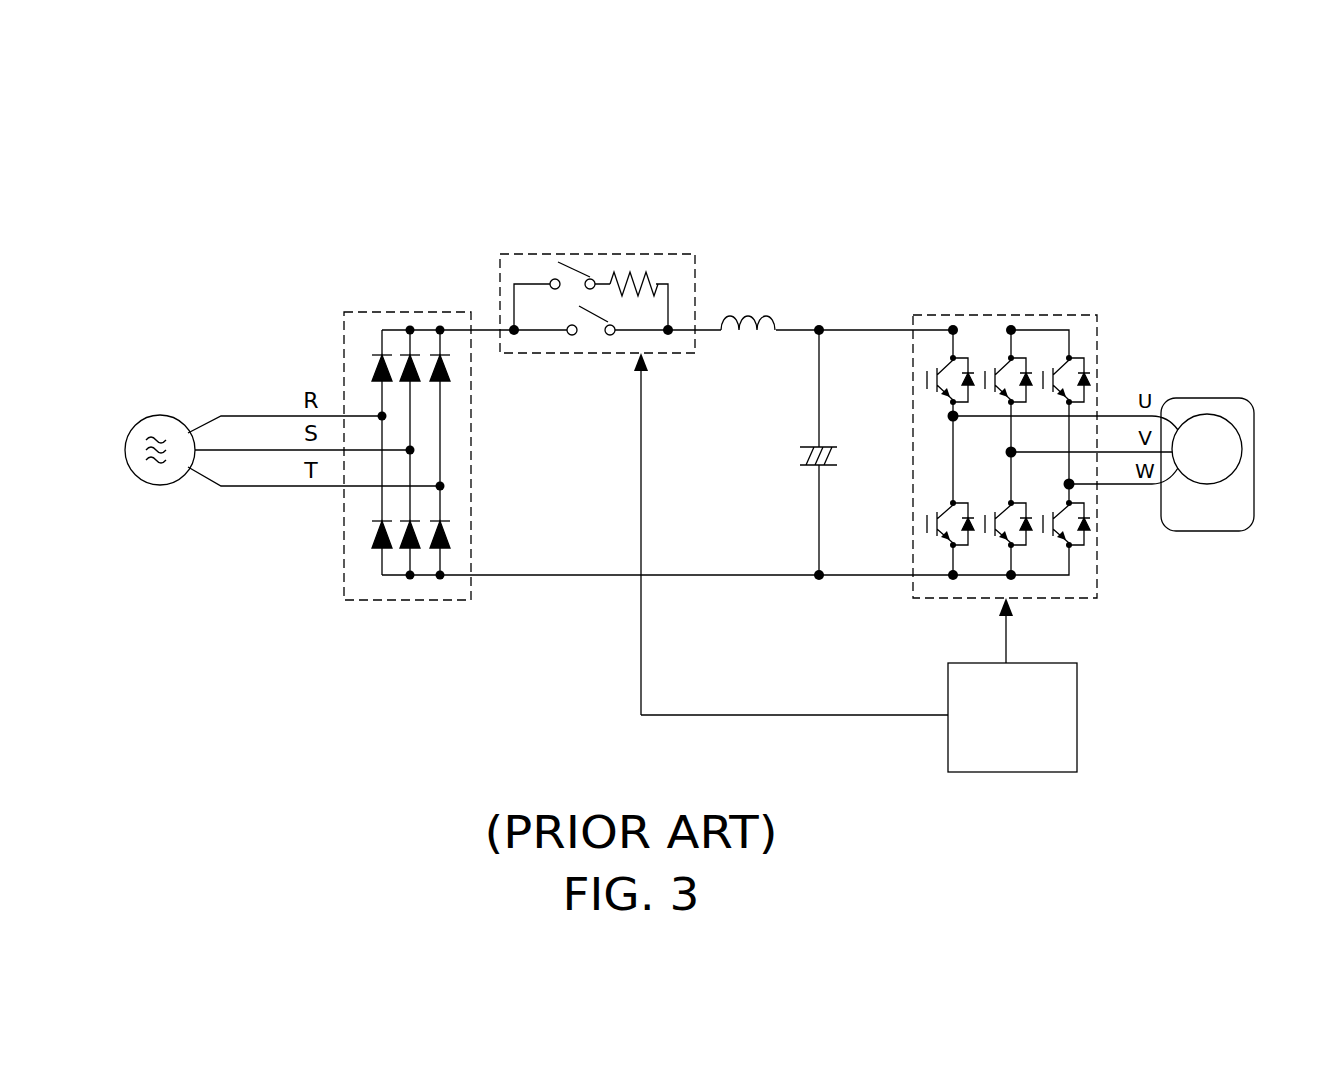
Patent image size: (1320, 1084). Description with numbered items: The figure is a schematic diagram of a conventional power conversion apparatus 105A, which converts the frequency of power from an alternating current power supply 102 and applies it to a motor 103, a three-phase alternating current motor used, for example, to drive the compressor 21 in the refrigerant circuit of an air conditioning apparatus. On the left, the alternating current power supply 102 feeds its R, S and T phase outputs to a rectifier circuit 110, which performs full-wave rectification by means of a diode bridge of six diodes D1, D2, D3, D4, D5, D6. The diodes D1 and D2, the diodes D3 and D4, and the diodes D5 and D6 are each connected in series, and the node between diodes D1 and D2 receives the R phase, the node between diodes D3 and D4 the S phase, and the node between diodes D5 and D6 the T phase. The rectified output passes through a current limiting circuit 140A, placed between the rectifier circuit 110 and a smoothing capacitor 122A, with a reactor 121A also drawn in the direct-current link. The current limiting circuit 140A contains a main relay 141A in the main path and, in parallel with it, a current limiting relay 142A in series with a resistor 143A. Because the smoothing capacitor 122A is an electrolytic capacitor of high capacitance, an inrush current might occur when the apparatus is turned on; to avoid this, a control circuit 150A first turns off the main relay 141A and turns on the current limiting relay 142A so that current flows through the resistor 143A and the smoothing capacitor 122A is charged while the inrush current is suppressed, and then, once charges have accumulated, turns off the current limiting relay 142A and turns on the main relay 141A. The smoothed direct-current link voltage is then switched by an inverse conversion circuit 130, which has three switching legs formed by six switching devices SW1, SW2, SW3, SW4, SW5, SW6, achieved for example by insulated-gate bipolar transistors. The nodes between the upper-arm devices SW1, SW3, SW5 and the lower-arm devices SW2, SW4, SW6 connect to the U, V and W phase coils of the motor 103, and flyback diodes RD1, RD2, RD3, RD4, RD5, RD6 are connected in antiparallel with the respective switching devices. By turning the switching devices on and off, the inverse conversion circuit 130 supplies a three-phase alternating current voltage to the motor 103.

The alternating current power supply 102 is at (160, 487).
The rectifier circuit 110 is at (360, 312).
The diode D1 is at (385, 352).
The diode D2 is at (380, 550).
The diode D3 is at (413, 352).
The diode D4 is at (406, 550).
The diode D5 is at (444, 358).
The diode D6 is at (440, 550).
The current limiting circuit 140A is at (527, 254).
The main relay 141A is at (592, 340).
The current limiting relay 142A is at (584, 268).
The resistor 143A is at (652, 276).
The reactor 121A is at (721, 340).
The smoothing capacitor 122A is at (803, 474).
The inverse conversion circuit 130 is at (1097, 315).
The switching device SW1 is at (927, 378).
The switching device SW2 is at (930, 528).
The switching device SW3 is at (985, 378).
The switching device SW4 is at (986, 530).
The switching device SW5 is at (1043, 378).
The switching device SW6 is at (1050, 530).
The flyback diode RD1 is at (968, 372).
The flyback diode RD2 is at (968, 530).
The flyback diode RD3 is at (1026, 372).
The flyback diode RD4 is at (1026, 530).
The flyback diode RD5 is at (1084, 372).
The flyback diode RD6 is at (1088, 530).
The control circuit 150A is at (1020, 760).
The compressor 21 is at (1218, 403).
The motor 103 is at (1222, 480).
The conventional power conversion apparatus 105A is at (1147, 168).